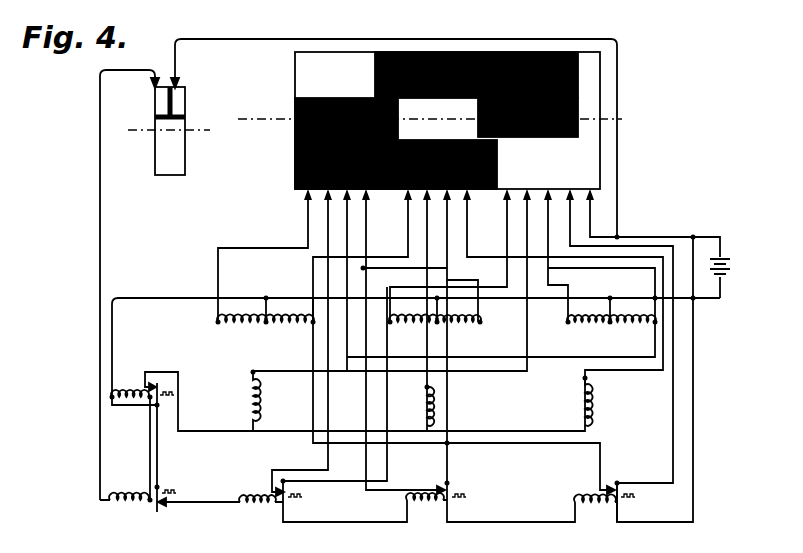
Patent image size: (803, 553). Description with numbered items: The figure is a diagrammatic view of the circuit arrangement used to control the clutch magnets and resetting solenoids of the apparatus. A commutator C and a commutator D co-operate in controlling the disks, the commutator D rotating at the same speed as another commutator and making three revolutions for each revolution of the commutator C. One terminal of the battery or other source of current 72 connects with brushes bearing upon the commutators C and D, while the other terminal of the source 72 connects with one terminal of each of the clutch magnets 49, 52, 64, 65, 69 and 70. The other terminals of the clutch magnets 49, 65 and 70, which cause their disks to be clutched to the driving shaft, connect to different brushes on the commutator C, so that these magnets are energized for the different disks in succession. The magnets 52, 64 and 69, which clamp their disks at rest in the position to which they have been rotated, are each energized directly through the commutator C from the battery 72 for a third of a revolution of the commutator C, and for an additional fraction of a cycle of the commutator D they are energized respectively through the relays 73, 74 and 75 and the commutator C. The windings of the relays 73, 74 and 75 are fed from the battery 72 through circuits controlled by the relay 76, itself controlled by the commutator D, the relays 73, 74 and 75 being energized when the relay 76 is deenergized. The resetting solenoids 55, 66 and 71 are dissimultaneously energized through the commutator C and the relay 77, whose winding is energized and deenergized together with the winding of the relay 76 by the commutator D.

The commutator C is at (601, 88).
The commutator D is at (188, 118).
The clutch magnet 49 is at (245, 327).
The clutch magnet 52 is at (292, 327).
The resetting solenoid 55 is at (260, 400).
The clutch magnet 64 is at (416, 327).
The clutch magnet 65 is at (462, 327).
The resetting solenoid 66 is at (420, 408).
The clutch magnet 69 is at (636, 327).
The clutch magnet 70 is at (590, 327).
The resetting solenoid 71 is at (580, 405).
The battery 72 is at (731, 266).
The relay 73 is at (598, 507).
The relay 74 is at (258, 507).
The relay 75 is at (427, 505).
The relay 76 is at (130, 505).
The relay 77 is at (123, 391).